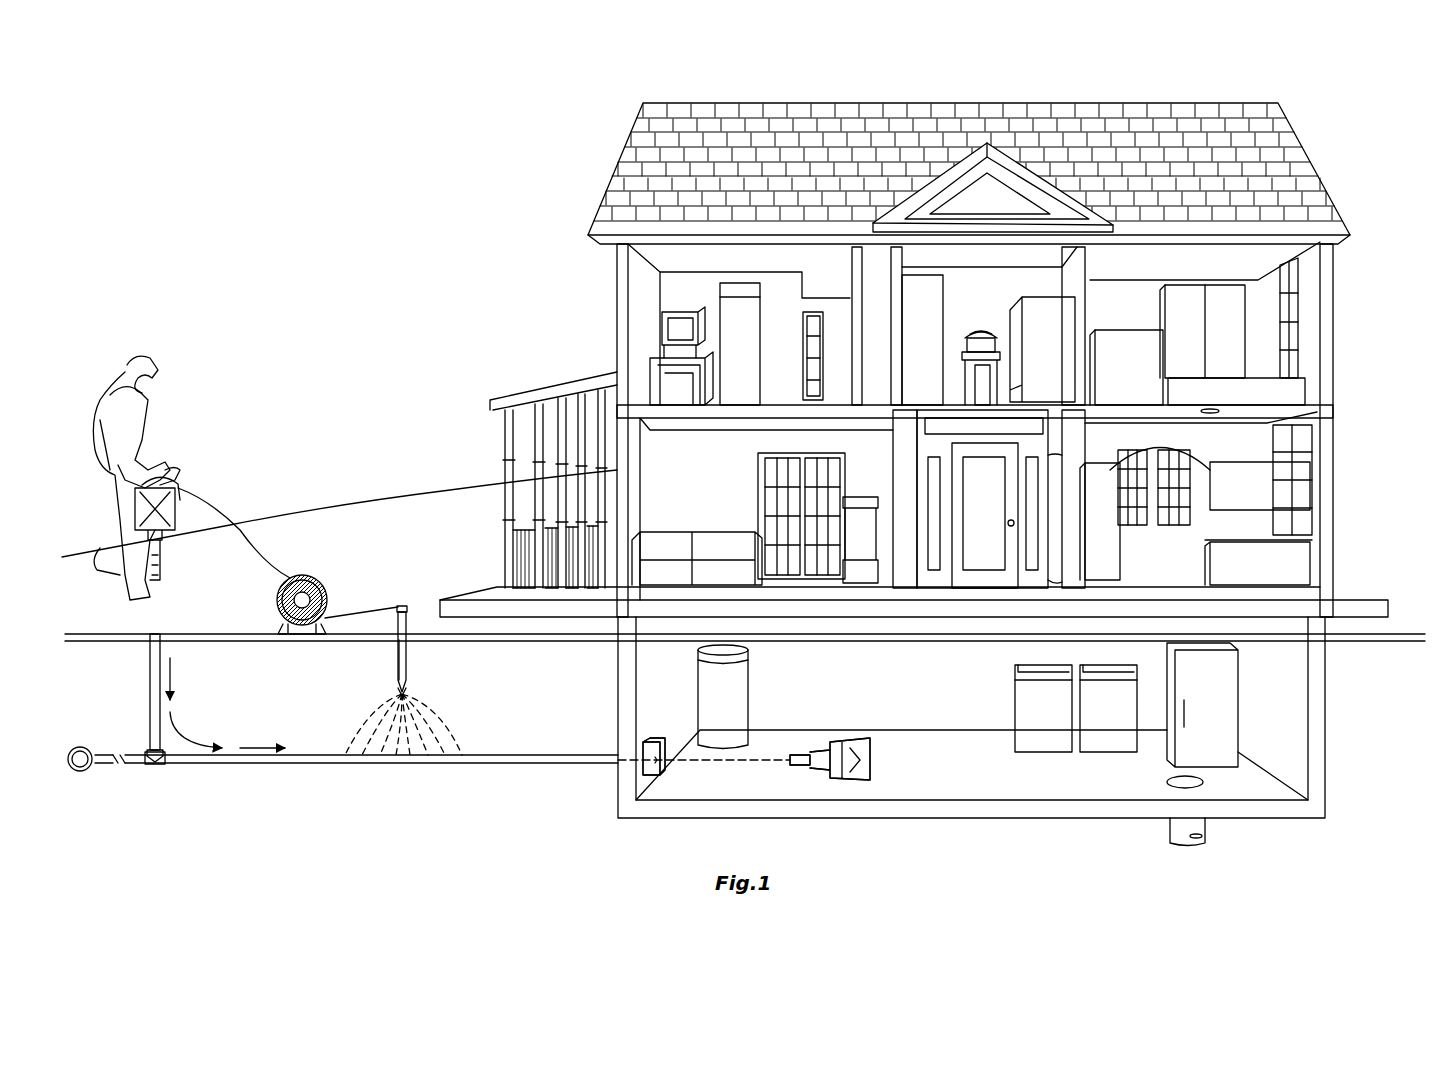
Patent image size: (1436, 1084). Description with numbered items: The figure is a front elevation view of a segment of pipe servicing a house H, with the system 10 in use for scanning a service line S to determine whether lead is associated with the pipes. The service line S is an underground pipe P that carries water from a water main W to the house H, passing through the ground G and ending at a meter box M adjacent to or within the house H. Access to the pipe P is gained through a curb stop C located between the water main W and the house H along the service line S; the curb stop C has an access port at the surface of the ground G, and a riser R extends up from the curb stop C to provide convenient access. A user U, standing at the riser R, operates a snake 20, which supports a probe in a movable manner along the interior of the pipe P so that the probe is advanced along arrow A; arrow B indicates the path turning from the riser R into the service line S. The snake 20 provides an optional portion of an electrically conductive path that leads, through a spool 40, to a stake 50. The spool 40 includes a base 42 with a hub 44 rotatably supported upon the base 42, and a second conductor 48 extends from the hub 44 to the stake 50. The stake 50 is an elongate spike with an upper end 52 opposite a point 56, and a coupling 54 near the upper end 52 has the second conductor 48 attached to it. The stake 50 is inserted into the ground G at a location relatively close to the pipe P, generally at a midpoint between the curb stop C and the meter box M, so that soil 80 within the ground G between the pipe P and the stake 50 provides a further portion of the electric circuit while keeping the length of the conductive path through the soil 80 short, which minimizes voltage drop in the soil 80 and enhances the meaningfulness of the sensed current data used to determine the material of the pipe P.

The system 10 is at (292, 425).
The snake 20 is at (172, 482).
The spool 40 is at (306, 575).
The base 42 is at (285, 628).
The hub 44 is at (278, 600).
The second conductor 48 is at (362, 618).
The stake 50 is at (406, 600).
The upper end 52 is at (406, 637).
The coupling 54 is at (398, 608).
The point 56 is at (406, 692).
The soil 80 is at (460, 735).
The user U is at (130, 400).
The house H is at (588, 332).
The ground G is at (368, 552).
The riser R is at (150, 690).
The arrow A is at (175, 680).
The bend B is at (196, 762).
The pipe P is at (232, 765).
The curb stop C is at (156, 768).
The service line S is at (115, 768).
The water main W is at (80, 774).
The meter box M is at (665, 745).